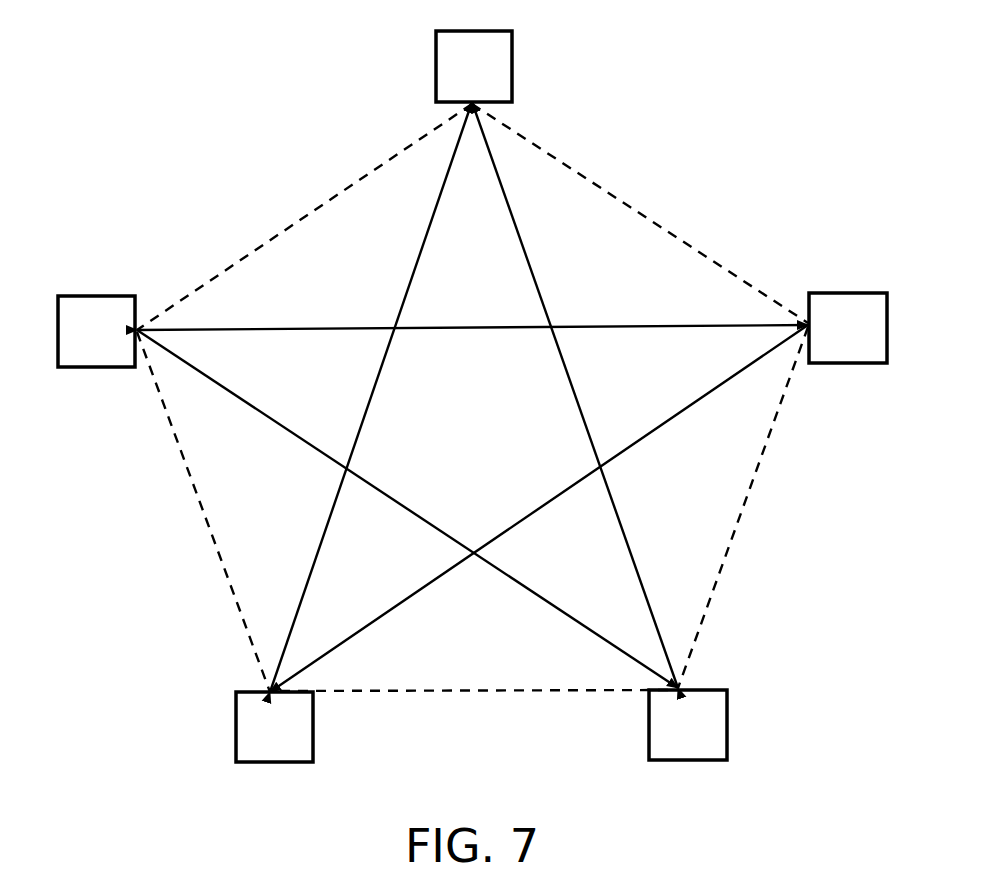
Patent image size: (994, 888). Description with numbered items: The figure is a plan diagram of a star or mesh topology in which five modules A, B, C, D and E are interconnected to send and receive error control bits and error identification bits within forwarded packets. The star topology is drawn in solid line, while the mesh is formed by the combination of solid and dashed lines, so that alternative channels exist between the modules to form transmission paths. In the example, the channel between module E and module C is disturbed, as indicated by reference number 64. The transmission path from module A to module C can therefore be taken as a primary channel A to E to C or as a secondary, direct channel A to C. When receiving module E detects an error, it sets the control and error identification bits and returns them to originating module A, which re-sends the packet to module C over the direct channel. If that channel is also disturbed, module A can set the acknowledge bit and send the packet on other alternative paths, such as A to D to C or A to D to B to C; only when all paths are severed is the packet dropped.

The disturbed channel 64 is at (318, 240).
The module A is at (274, 727).
The module B is at (848, 328).
The module C is at (474, 66).
The module D is at (688, 725).
The module E is at (96, 331).